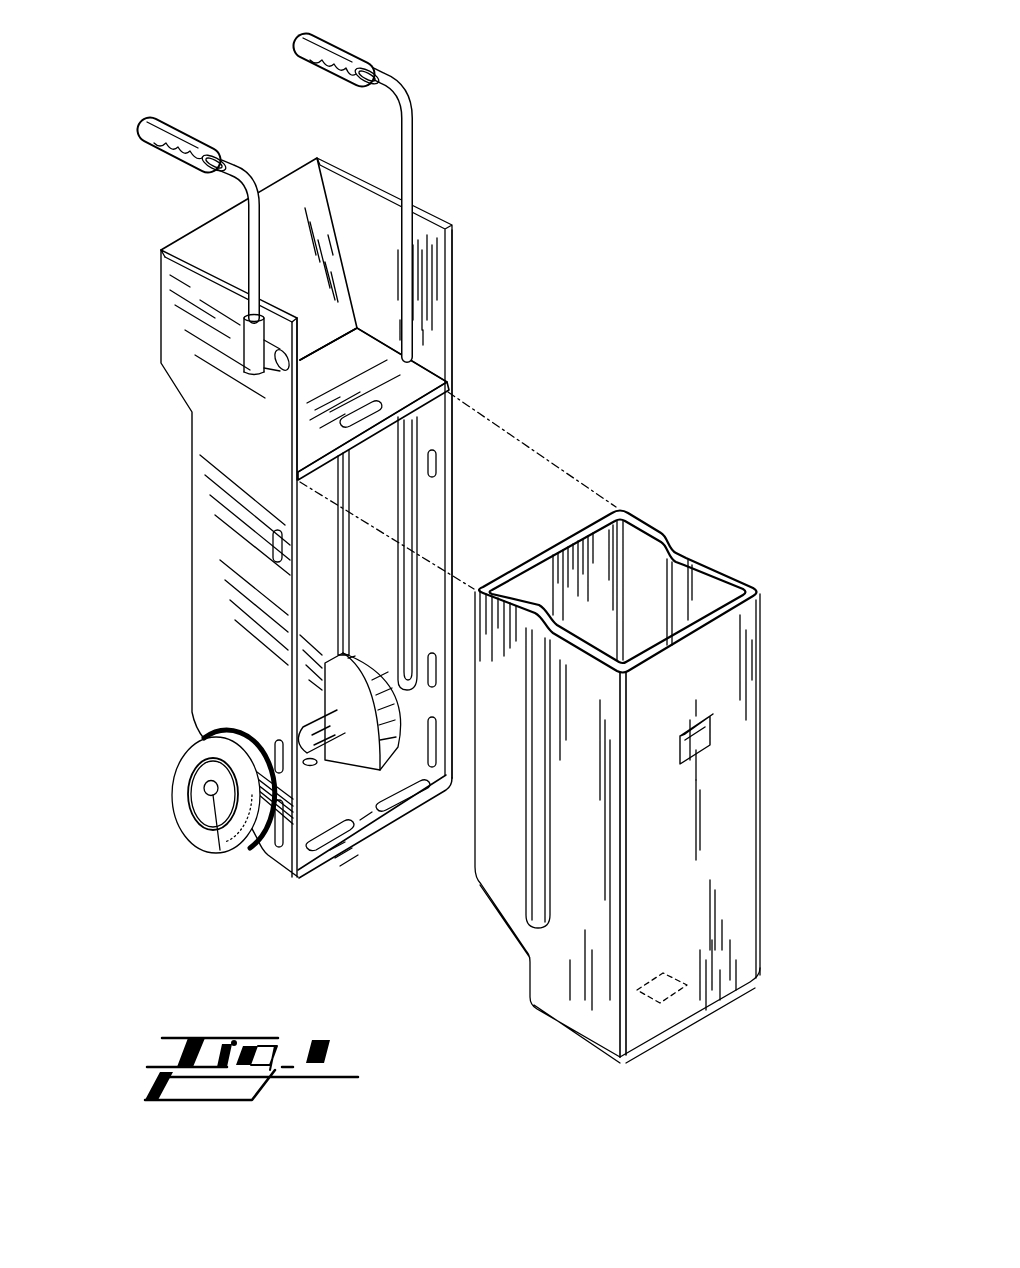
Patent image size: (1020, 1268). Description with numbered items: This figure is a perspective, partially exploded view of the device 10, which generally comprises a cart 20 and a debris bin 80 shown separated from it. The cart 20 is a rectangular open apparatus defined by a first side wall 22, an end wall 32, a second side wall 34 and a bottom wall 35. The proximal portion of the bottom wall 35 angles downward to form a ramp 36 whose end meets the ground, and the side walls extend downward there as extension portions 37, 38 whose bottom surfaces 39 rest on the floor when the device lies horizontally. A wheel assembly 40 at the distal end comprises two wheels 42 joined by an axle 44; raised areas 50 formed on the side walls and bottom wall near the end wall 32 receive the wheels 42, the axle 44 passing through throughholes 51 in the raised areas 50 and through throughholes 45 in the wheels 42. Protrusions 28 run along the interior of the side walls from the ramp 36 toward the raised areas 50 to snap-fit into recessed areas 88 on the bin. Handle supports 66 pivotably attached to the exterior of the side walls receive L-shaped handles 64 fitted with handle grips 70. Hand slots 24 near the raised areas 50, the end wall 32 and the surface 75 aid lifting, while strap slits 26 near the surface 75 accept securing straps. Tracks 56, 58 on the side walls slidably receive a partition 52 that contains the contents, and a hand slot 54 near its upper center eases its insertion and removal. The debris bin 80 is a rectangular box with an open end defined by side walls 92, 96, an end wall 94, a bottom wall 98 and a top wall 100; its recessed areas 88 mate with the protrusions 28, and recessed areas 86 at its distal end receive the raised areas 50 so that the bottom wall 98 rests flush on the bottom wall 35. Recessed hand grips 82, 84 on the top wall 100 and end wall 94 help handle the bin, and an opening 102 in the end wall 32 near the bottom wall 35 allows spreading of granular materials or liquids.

The device 10 is at (562, 236).
The cart 20 is at (121, 562).
The first side wall 22 is at (197, 592).
The hand slots 24 is at (275, 838).
The strap slits 26 is at (270, 542).
The protrusions 28 is at (415, 508).
The end wall 32 is at (360, 818).
The second side wall 34 is at (440, 492).
The bottom wall 35 is at (311, 559).
The ramp 36 is at (286, 190).
The extension portion 37 is at (350, 158).
The extension portion 38 is at (168, 337).
The bottom surfaces 39 is at (160, 315).
The wheel assembly 40 is at (199, 796).
The wheels 42 is at (200, 822).
The axle 44 is at (307, 703).
The throughholes 45 is at (234, 850).
The raised areas 50 is at (363, 693).
The throughholes 51 is at (347, 735).
The partition 52 is at (383, 352).
The hand slot 54 is at (445, 397).
The track 56 is at (453, 380).
The track 58 is at (293, 473).
The handles 64 is at (420, 108).
The handle supports 66 is at (250, 346).
The handle grips 70 is at (300, 62).
The surface 75 is at (453, 283).
The debris bin 80 is at (625, 777).
The hand grip 82 is at (715, 740).
The hand grip 84 is at (667, 998).
The recessed areas 86 is at (527, 973).
The recessed areas 88 is at (672, 540).
The side wall 92 is at (597, 992).
The end wall 94 is at (648, 1042).
The side wall 96 is at (760, 800).
The bottom wall 98 is at (588, 525).
The top wall 100 is at (733, 957).
The opening 102 is at (308, 767).